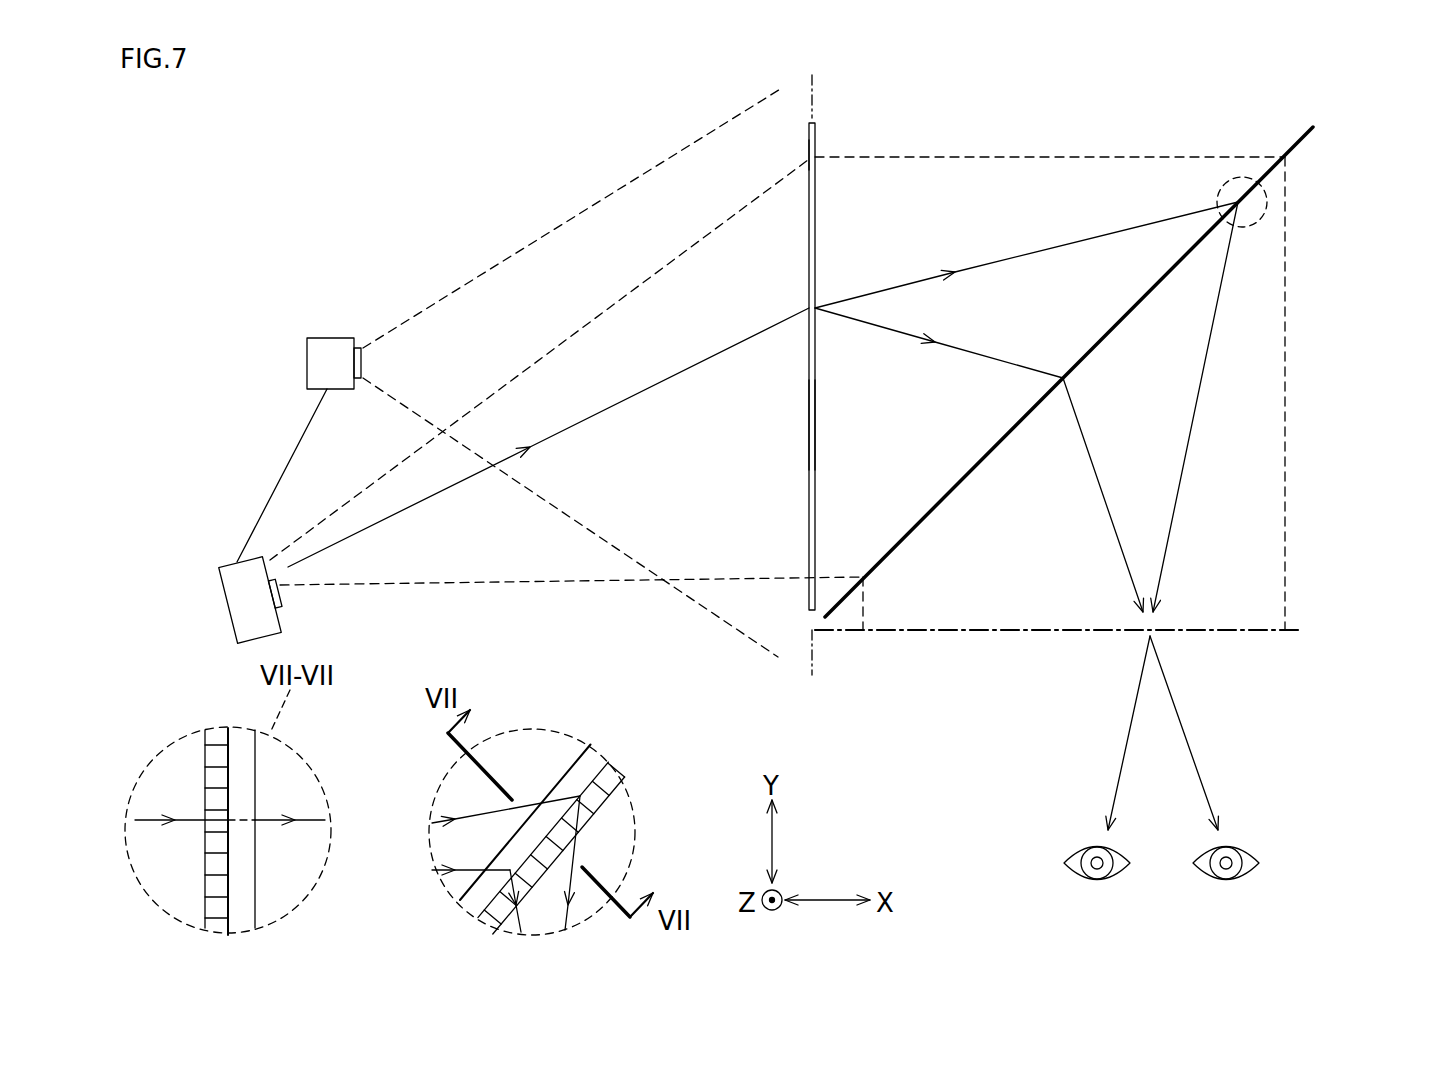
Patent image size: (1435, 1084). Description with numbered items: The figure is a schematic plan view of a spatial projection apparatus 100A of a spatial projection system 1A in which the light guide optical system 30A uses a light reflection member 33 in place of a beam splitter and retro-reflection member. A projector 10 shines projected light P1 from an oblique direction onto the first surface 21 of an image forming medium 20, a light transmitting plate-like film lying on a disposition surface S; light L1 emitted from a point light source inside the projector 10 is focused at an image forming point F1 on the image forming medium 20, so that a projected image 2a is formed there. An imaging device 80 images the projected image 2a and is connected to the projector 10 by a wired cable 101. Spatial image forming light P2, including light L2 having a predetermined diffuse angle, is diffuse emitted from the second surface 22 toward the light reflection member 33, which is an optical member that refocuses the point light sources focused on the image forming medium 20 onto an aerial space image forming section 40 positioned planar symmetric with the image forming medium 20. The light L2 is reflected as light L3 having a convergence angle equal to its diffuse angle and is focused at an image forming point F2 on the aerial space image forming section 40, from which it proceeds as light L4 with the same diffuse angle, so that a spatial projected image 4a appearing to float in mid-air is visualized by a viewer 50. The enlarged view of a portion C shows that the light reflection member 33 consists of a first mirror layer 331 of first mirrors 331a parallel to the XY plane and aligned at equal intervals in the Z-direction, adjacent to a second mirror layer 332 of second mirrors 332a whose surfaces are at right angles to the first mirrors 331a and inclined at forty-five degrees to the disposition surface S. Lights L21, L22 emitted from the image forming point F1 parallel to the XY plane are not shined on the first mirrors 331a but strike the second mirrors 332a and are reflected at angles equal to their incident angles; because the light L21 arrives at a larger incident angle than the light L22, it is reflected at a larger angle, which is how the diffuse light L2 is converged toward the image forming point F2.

The spatial projection system 1A is at (350, 168).
The spatial projection apparatus 100A is at (350, 218).
The projected image 2a is at (805, 155).
The projector 10 is at (220, 598).
The image forming medium 20 is at (808, 478).
The first surface 21 is at (808, 428).
The second surface 22 is at (816, 410).
The light guide optical system 30A is at (1310, 196).
The light reflection member 33 is at (1310, 143).
The aerial space image forming section 40 is at (1076, 633).
The spatial projected image 4a is at (1287, 637).
The viewer 50 is at (1048, 873).
The imaging device 80 is at (307, 362).
The wired cable 101 is at (283, 475).
The first mirror layer 331 is at (205, 745).
The first mirror 331a is at (215, 766).
The second mirror layer 332 is at (255, 870).
The second mirror 332a is at (243, 896).
The disposition surface S is at (811, 360).
The portion C is at (1263, 215).
The image forming point F1 is at (805, 305).
The image forming point F2 is at (1148, 634).
The light L1 is at (655, 383).
The light L2 is at (1100, 237).
The light L3 is at (1203, 392).
The light L4 is at (1188, 737).
The light L21 is at (270, 818).
The light L22 is at (470, 870).
The projected light P1 is at (420, 595).
The spatial image forming light P2 is at (841, 578).